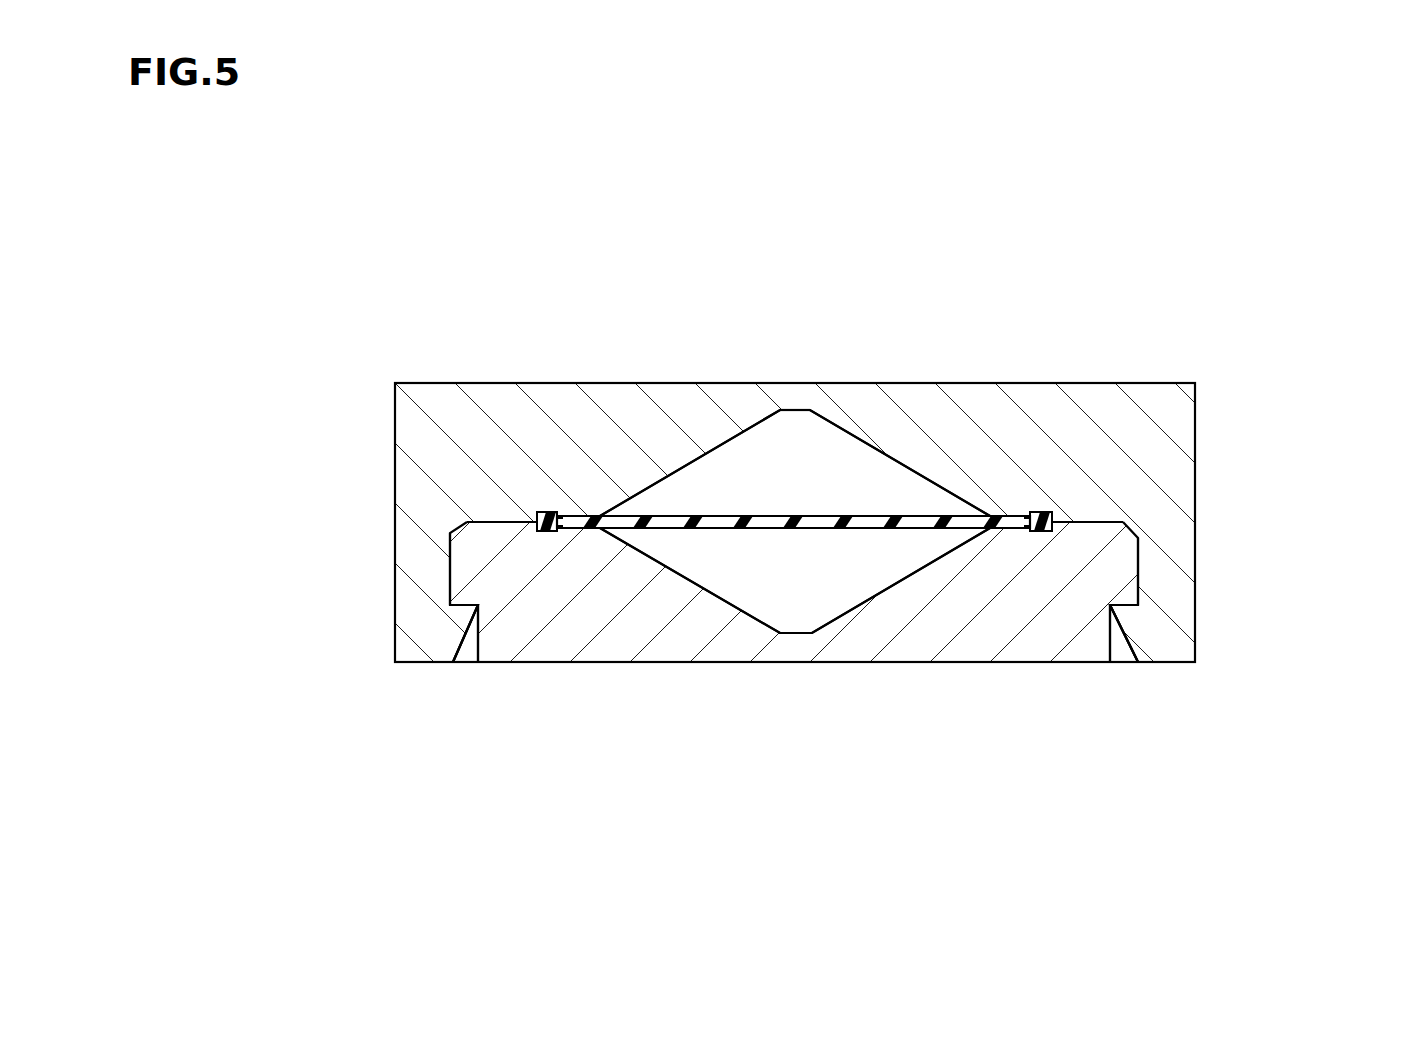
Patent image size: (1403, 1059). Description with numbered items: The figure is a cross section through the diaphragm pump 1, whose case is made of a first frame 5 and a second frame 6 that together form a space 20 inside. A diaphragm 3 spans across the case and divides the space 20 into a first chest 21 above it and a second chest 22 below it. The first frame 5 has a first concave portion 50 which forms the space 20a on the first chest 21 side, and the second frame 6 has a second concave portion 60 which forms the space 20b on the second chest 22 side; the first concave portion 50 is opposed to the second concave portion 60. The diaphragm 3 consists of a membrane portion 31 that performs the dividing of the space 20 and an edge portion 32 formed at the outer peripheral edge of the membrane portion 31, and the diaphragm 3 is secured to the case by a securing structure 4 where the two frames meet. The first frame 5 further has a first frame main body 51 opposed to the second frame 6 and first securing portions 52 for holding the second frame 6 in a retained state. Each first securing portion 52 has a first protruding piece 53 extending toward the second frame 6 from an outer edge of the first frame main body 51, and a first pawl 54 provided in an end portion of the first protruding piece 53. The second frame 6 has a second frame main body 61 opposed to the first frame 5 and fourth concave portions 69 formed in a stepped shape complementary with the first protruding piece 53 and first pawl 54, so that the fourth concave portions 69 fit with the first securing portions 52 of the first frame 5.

The diaphragm pump 1 is at (1273, 233).
The diaphragm 3 is at (935, 757).
The securing structure 4 is at (447, 563).
The first frame 5 is at (535, 420).
The second frame 6 is at (595, 605).
The space 20 is at (1080, 282).
The space on the first chest side 20a is at (843, 462).
The space on the second chest side 20b is at (900, 550).
The first chest 21 is at (745, 470).
The second chest 22 is at (825, 580).
The membrane portion 31 is at (960, 530).
The edge portion 32 is at (553, 530).
The first concave portion 50 is at (780, 445).
The first frame main body 51 is at (625, 405).
The first securing portion 52 is at (260, 573).
The first protruding piece 53 is at (420, 565).
The first pawl 54 is at (462, 617).
The second concave portion 60 is at (765, 595).
The second frame main body 61 is at (655, 620).
The fourth concave portion 69 is at (468, 647).